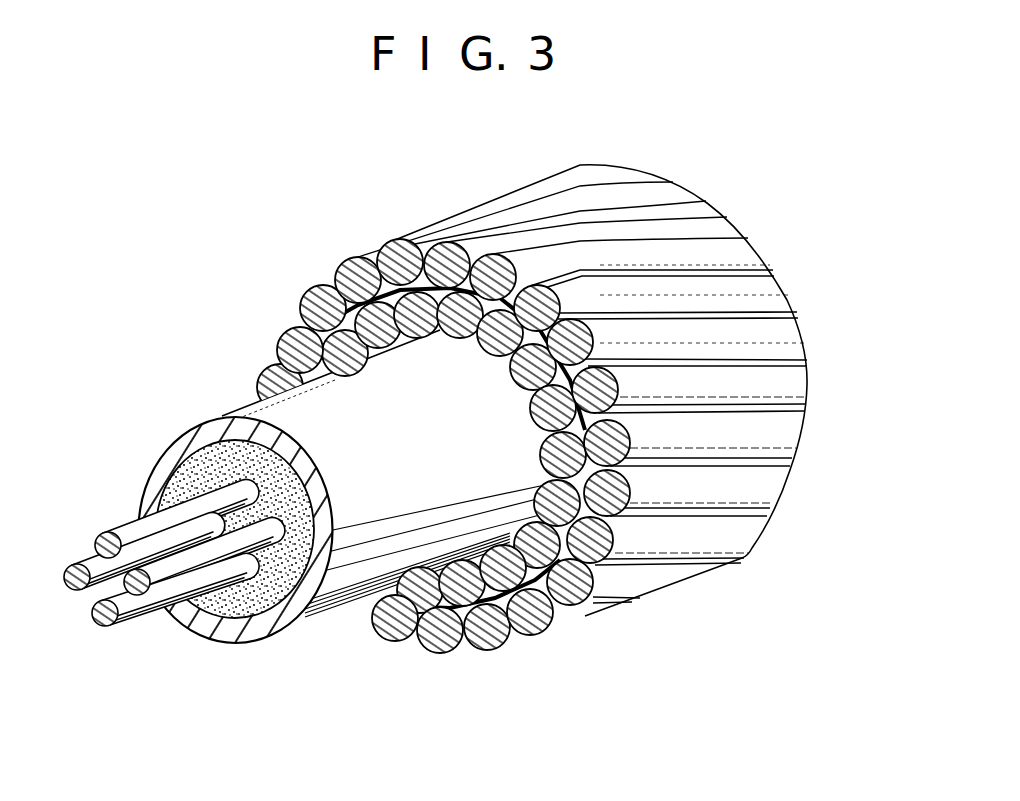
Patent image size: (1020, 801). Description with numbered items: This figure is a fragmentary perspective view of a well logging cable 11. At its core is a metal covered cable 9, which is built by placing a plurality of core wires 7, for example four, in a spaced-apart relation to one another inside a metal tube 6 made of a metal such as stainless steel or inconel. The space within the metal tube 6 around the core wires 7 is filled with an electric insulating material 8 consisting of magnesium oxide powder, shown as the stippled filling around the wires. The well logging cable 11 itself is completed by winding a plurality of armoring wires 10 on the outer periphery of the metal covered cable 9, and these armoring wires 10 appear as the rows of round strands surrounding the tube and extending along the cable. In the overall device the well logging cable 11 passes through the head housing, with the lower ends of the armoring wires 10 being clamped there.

The metal tube 6 is at (170, 443).
The core wires 7 is at (135, 530).
The electric insulating material 8 is at (263, 607).
The metal covered cable 9 is at (174, 571).
The armoring wires 10 is at (373, 317).
The well logging cable 11 is at (252, 393).